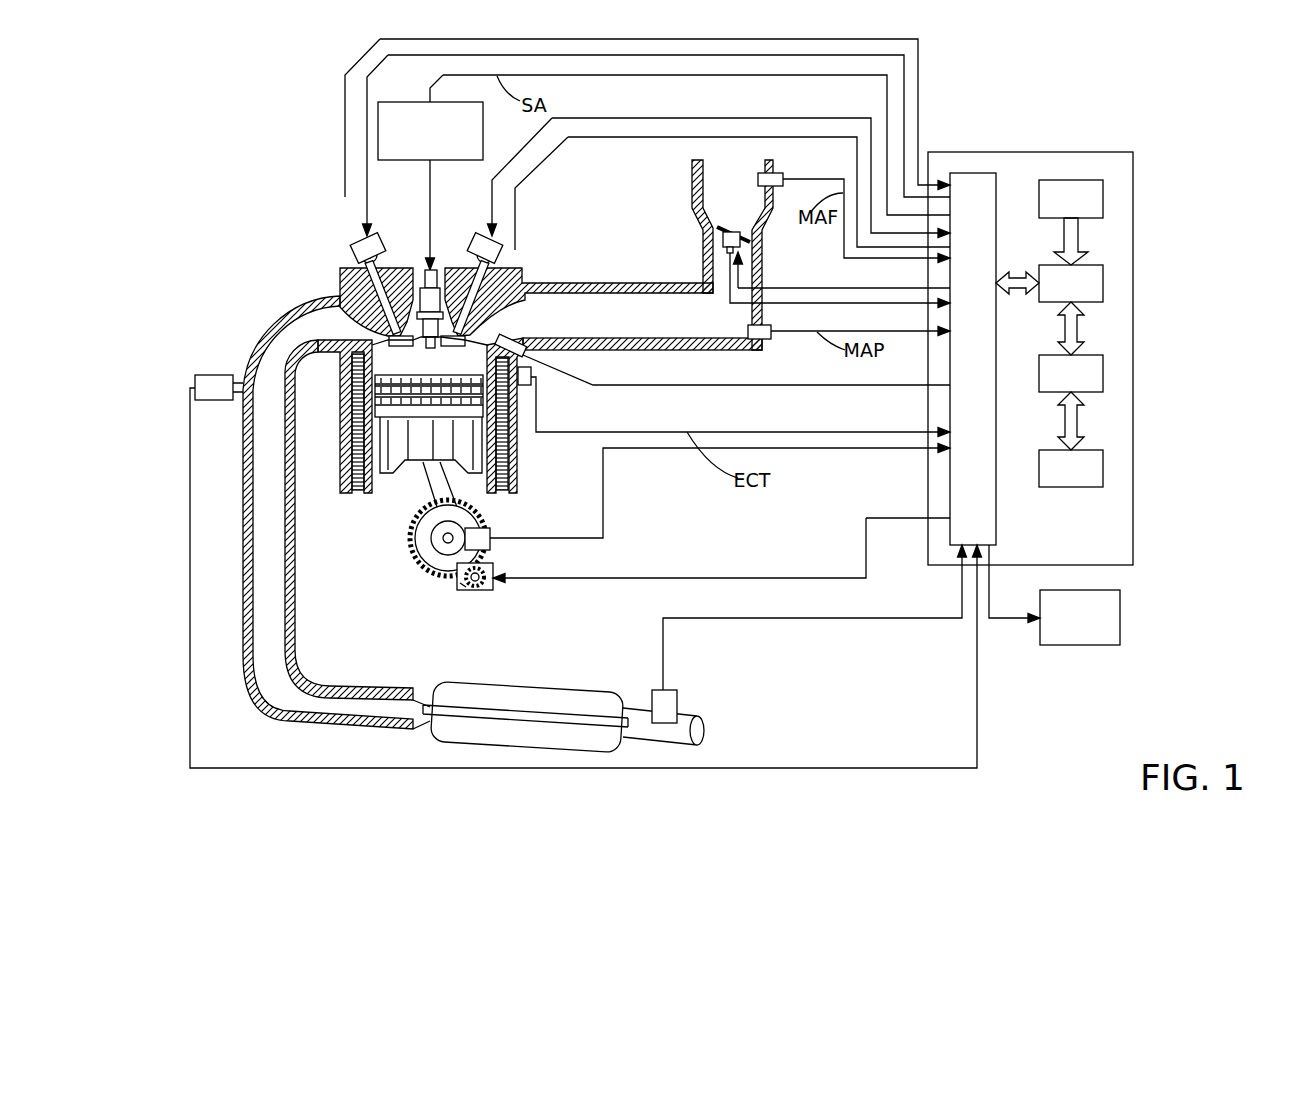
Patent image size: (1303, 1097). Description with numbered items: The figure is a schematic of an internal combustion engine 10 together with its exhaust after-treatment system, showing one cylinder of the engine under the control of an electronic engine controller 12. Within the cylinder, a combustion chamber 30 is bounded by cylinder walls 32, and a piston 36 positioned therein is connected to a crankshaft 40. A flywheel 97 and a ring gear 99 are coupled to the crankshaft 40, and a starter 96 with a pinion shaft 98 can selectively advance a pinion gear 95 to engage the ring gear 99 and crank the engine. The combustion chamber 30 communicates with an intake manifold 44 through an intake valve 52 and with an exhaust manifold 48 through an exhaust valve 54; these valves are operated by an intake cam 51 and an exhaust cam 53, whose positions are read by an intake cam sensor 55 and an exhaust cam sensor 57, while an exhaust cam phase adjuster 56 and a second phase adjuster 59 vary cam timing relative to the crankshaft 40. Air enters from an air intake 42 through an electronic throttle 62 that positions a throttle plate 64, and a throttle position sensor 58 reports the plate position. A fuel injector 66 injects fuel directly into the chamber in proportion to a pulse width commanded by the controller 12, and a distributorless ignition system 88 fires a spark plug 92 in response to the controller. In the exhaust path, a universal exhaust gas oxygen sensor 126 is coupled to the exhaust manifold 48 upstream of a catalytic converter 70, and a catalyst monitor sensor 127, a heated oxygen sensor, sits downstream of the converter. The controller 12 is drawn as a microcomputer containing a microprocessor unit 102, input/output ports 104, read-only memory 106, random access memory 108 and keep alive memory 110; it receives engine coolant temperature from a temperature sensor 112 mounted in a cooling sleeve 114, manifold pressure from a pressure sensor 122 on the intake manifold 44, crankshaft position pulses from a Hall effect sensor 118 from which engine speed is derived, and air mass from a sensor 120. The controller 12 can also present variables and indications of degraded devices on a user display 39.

The internal combustion engine 10 is at (278, 223).
The electronic engine controller 12 is at (1133, 152).
The combustion chamber 30 is at (427, 358).
The cylinder walls 32 is at (377, 480).
The piston 36 is at (413, 448).
The user display 39 is at (1054, 595).
The crankshaft 40 is at (437, 572).
The air intake 42 is at (722, 204).
The intake manifold 44 is at (664, 331).
The exhaust manifold 48 is at (299, 333).
The intake cam 51 is at (474, 248).
The intake valve 52 is at (468, 328).
The exhaust cam 53 is at (372, 243).
The exhaust valve 54 is at (336, 300).
The intake cam sensor 55 is at (498, 258).
The exhaust cam phase adjuster 56 is at (380, 251).
The exhaust cam sensor 57 is at (357, 257).
The throttle position sensor 58 is at (727, 251).
The cam phase adjuster 59 is at (474, 247).
The electronic throttle 62 is at (746, 234).
The throttle plate 64 is at (722, 238).
The fuel injector 66 is at (722, 369).
The catalytic converter 70 is at (447, 680).
The distributorless ignition system 88 is at (390, 102).
The spark plug 92 is at (434, 266).
The pinion gear 95 is at (483, 591).
The starter 96 is at (493, 590).
The flywheel 97 is at (424, 541).
The pinion shaft 98 is at (470, 589).
The ring gear 99 is at (446, 569).
The microprocessor unit 102 is at (1103, 283).
The input/output ports 104 is at (997, 177).
The read-only memory 106 is at (1103, 197).
The random access memory 108 is at (1103, 372).
The keep alive memory 110 is at (1103, 465).
The temperature sensor 112 is at (536, 386).
The cooling sleeve 114 is at (503, 448).
The Hall effect sensor 118 is at (492, 529).
The air mass sensor 120 is at (783, 172).
The pressure sensor 122 is at (772, 339).
The Universal Exhaust Gas Oxygen sensor 126 is at (197, 376).
The catalyst monitor sensor 127 is at (677, 693).